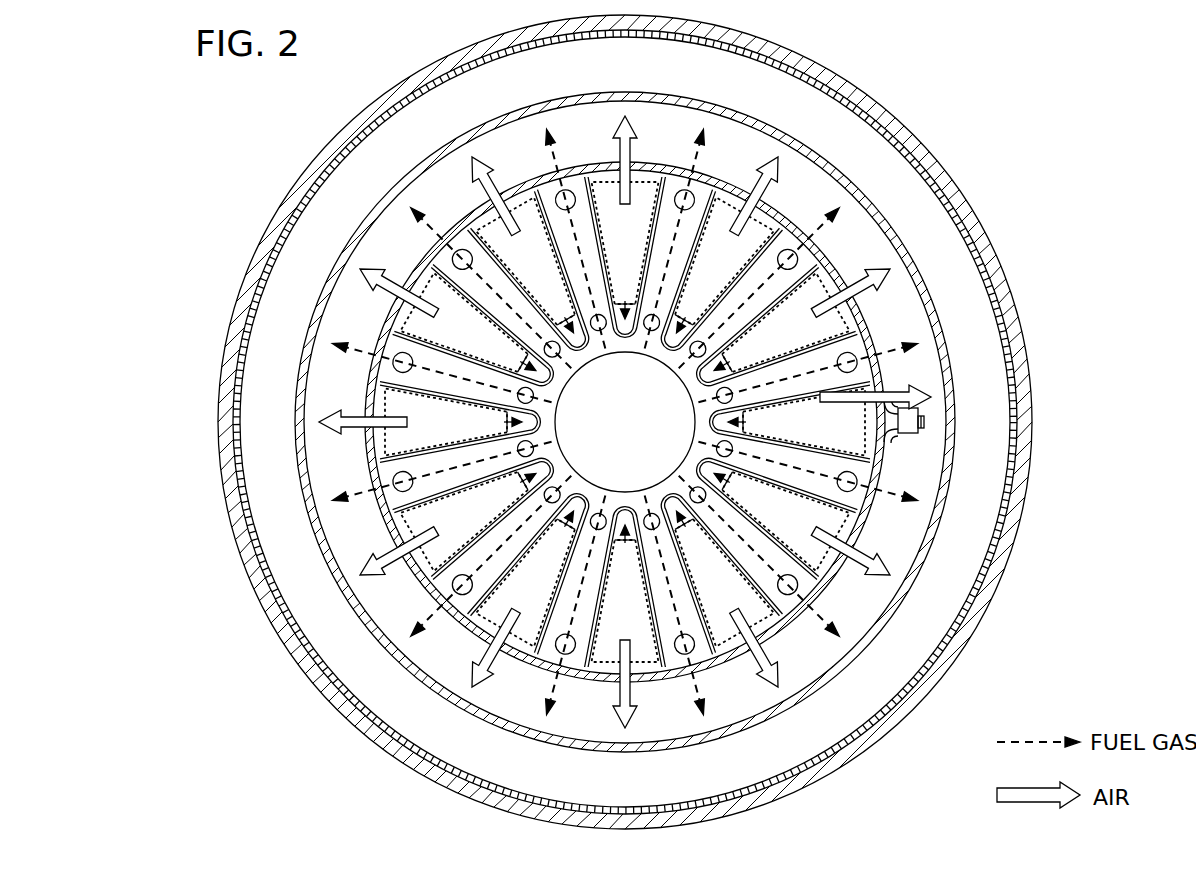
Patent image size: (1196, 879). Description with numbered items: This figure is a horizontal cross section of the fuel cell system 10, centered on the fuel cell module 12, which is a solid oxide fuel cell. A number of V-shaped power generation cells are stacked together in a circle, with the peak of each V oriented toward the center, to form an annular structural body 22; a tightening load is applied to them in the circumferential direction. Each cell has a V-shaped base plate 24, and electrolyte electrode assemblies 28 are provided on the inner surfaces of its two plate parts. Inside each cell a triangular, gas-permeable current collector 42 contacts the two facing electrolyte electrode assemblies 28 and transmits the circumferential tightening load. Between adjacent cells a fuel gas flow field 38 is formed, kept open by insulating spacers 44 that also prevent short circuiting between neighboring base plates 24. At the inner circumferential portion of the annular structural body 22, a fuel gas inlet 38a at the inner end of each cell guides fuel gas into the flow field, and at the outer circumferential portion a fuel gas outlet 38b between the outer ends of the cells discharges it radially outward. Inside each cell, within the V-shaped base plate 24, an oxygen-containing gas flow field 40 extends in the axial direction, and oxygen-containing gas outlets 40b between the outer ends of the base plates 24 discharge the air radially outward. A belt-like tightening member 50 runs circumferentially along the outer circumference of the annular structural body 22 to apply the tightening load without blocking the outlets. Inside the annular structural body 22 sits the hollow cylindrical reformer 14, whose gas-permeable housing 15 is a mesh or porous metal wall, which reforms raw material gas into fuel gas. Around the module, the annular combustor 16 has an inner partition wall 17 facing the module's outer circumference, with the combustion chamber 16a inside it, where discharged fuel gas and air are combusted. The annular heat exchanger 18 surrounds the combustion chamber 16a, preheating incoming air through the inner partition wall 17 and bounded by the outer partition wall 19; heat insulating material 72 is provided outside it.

The fuel cell system 10 is at (242, 112).
The fuel cell module 12 is at (345, 468).
The reformer 14 is at (582, 497).
The housing 15 is at (620, 497).
The combustor 16 is at (363, 215).
The combustion chamber 16a is at (360, 278).
The inner partition wall 17 is at (320, 302).
The heat exchanger 18 is at (975, 222).
The outer partition wall 19 is at (988, 258).
The annular structural body 22 is at (520, 197).
The base plate 24 is at (473, 233).
The electrolyte electrode assembly 28 is at (455, 335).
The fuel gas flow field 38 is at (580, 195).
The fuel gas inlet 38a is at (706, 360).
The fuel gas outlet 38b is at (807, 240).
The oxygen-containing gas flow field 40 is at (400, 431).
The oxygen-containing gas outlet 40b is at (735, 203).
The current collector 42 is at (600, 663).
The insulating spacer 44 is at (566, 191).
The tightening member 50 is at (738, 662).
The heat insulating material 72 is at (935, 672).